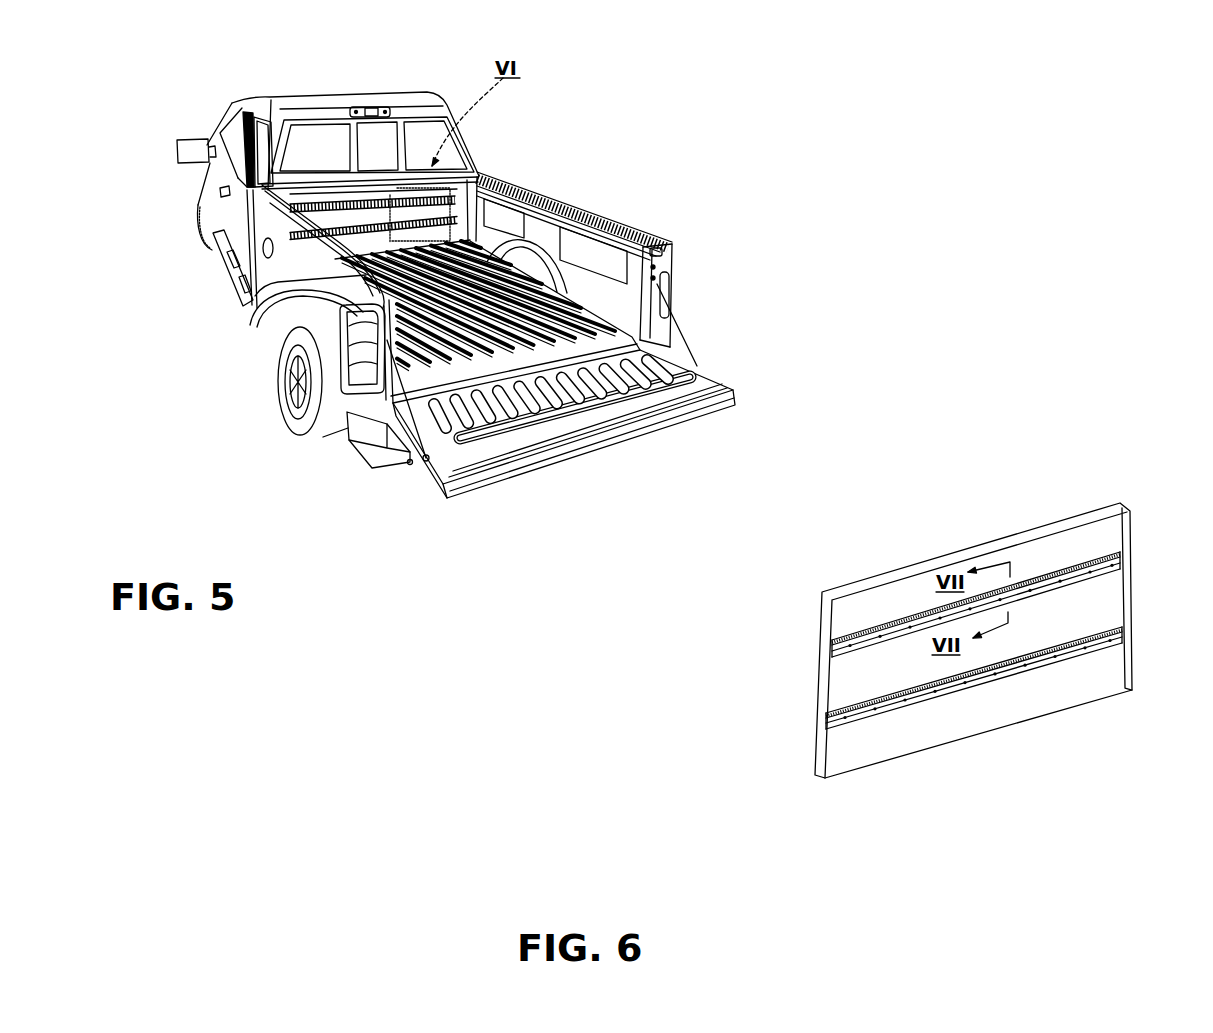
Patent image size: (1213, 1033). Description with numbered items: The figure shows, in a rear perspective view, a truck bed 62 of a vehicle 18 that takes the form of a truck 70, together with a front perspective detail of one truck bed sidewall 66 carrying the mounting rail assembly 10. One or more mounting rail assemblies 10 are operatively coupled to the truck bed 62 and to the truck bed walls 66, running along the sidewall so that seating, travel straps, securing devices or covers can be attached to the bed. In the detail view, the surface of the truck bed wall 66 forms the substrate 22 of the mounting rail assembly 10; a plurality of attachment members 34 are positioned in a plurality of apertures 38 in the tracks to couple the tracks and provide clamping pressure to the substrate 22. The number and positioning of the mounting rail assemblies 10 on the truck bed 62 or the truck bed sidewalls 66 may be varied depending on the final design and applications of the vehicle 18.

In FIG. 5, the mounting rail assembly 10 is at (353, 224).
In FIG. 6, the mounting rail assembly 10 is at (903, 616).
In FIG. 5, the vehicle 18 is at (204, 118).
In FIG. 5, the truck 70 is at (299, 185).
In FIG. 6, the substrate 22 is at (818, 680).
In FIG. 6, the attachment members 34 is at (1032, 586).
In FIG. 6, the apertures 38 is at (1030, 657).
In FIG. 5, the truck bed 62 is at (378, 262).
In FIG. 5, the truck bed sidewall 66 is at (540, 228).
In FIG. 6, the truck bed sidewall 66 is at (1082, 607).